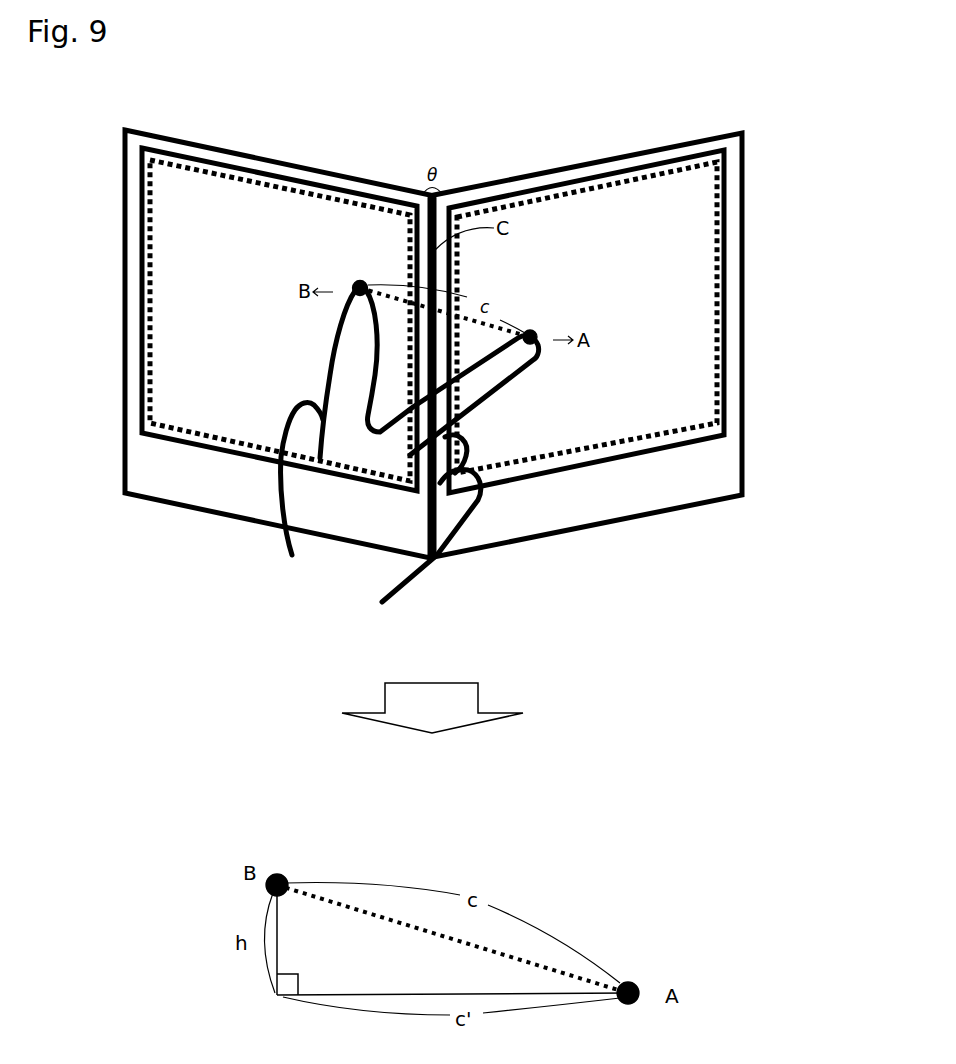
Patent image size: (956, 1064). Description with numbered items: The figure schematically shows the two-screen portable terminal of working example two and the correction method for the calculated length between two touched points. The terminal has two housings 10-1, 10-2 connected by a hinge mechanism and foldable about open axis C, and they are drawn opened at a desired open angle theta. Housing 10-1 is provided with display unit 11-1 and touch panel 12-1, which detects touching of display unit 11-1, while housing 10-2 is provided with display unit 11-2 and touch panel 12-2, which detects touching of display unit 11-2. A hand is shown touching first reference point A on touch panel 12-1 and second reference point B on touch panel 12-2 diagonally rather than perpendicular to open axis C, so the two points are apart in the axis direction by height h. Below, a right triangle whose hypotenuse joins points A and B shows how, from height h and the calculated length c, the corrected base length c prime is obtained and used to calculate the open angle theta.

The housing 10-1 is at (645, 152).
The housing 10-2 is at (223, 148).
The display unit 11-1 is at (725, 273).
The display unit 11-2 is at (143, 273).
The touch panel 12-1 is at (717, 365).
The touch panel 12-2 is at (150, 365).